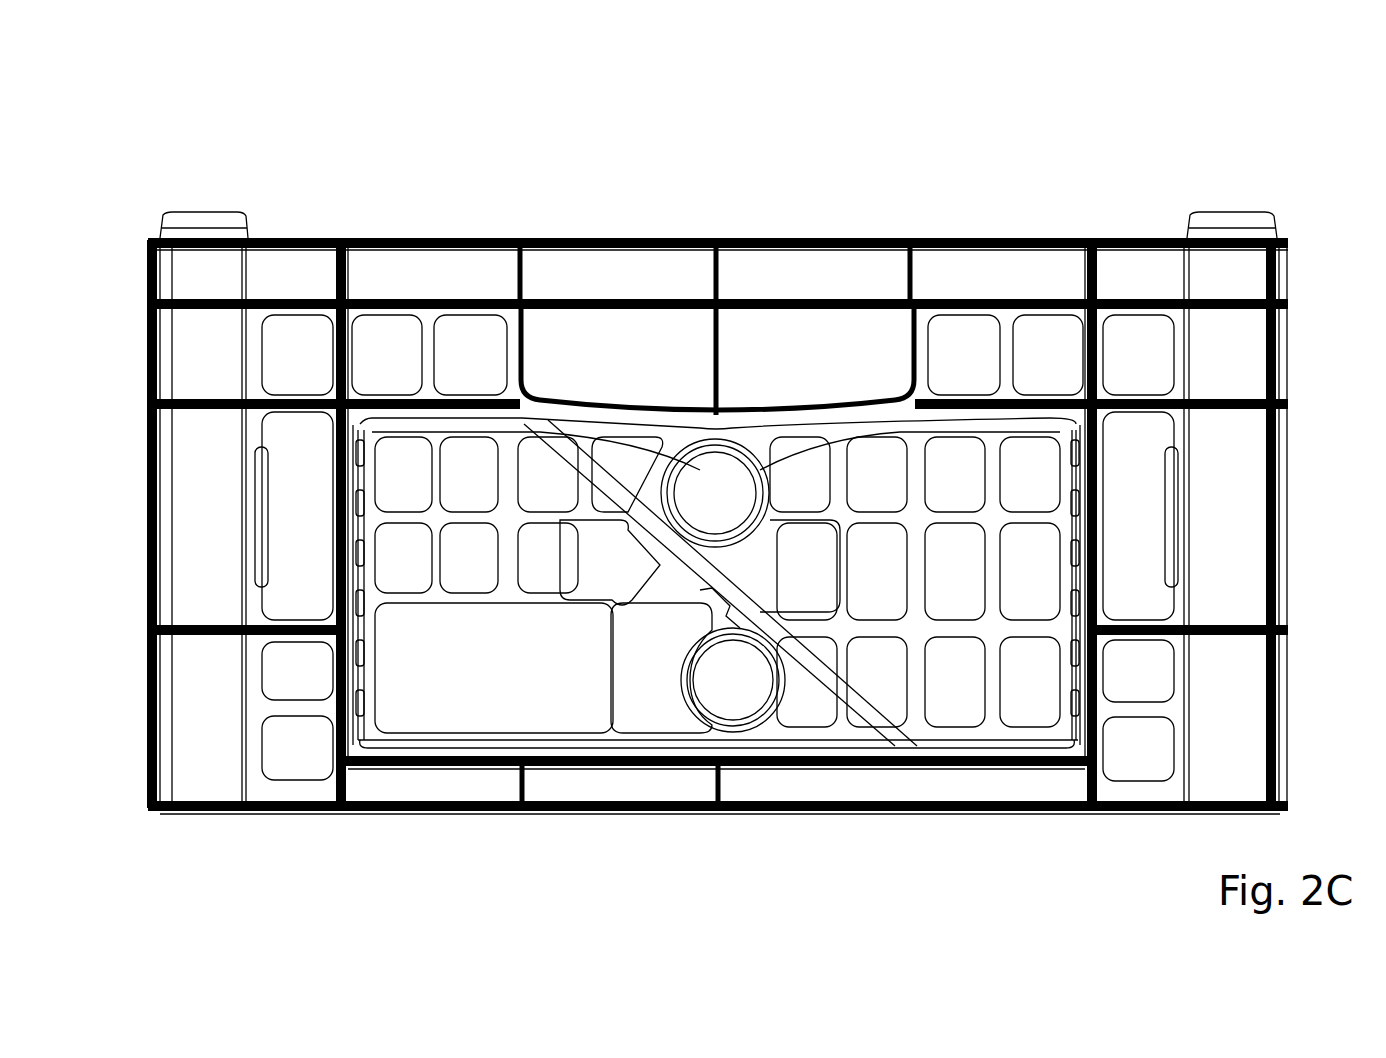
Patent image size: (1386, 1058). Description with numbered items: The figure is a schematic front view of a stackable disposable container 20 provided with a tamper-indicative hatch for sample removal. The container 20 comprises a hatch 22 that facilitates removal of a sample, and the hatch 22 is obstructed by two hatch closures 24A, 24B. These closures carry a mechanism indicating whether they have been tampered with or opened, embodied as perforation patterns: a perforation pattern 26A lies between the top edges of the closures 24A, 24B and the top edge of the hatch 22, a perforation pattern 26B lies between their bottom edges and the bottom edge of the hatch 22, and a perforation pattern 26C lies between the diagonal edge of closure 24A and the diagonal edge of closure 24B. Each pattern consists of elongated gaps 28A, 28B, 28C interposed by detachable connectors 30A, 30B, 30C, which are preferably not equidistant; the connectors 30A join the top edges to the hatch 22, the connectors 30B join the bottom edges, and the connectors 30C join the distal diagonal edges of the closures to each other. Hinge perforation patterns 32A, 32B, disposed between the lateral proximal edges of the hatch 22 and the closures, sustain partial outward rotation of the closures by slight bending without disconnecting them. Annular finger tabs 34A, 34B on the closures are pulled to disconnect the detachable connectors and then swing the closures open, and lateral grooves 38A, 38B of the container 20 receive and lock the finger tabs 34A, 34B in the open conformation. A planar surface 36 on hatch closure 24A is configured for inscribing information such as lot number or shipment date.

The disposable container 20 is at (700, 474).
The hatch 22 is at (626, 818).
The hatch closure 24A is at (925, 512).
The hatch closure 24B is at (505, 513).
The perforation pattern 26A is at (870, 388).
The perforation pattern 26B is at (662, 750).
The perforation pattern 26C is at (652, 490).
The elongated gaps 28A is at (925, 507).
The elongated gaps 28B is at (943, 742).
The elongated gaps 28C is at (723, 588).
The detachable connectors 30A is at (462, 428).
The detachable connectors 30B is at (598, 744).
The detachable connectors 30C is at (737, 608).
The hinge perforation pattern 32A is at (1075, 583).
The hinge perforation pattern 32B is at (345, 577).
The annular finger tab 34A is at (688, 505).
The annular finger tab 34B is at (763, 710).
The planar surface 36 is at (485, 677).
The lateral groove 38A is at (1178, 525).
The lateral groove 38B is at (255, 512).